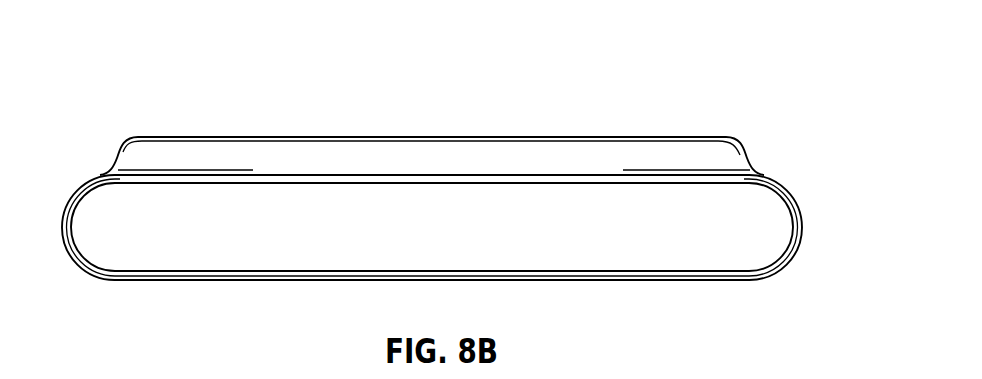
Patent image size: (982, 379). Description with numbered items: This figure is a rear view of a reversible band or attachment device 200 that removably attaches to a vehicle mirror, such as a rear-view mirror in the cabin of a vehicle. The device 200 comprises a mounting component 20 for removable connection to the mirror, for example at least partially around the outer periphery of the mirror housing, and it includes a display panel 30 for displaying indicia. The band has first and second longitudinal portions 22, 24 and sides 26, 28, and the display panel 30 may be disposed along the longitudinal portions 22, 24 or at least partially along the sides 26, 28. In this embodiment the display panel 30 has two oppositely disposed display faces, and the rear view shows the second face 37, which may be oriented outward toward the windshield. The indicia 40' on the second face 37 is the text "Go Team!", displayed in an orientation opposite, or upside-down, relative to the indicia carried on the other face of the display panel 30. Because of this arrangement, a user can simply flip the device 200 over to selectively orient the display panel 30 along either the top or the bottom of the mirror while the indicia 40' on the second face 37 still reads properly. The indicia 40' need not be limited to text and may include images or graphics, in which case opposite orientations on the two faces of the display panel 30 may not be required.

The band or attachment device 200 is at (560, 84).
The mounting component 20 is at (772, 165).
The first longitudinal portion 22 is at (397, 176).
The second longitudinal portion 24 is at (358, 270).
The side 26 is at (790, 217).
The side 28 is at (68, 220).
The display panel 30 is at (237, 137).
The second face 37 is at (658, 152).
The indicia 40' is at (435, 119).